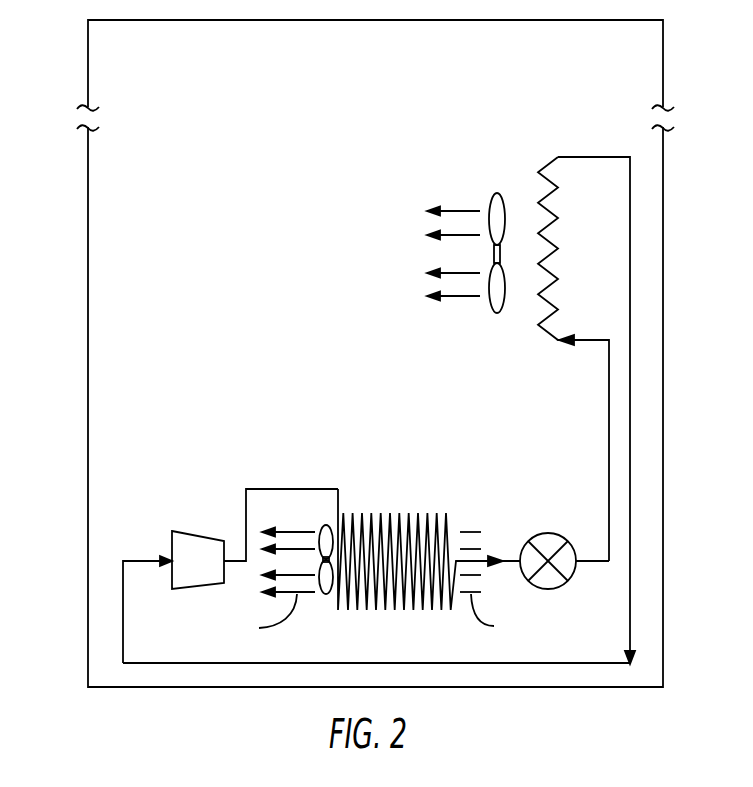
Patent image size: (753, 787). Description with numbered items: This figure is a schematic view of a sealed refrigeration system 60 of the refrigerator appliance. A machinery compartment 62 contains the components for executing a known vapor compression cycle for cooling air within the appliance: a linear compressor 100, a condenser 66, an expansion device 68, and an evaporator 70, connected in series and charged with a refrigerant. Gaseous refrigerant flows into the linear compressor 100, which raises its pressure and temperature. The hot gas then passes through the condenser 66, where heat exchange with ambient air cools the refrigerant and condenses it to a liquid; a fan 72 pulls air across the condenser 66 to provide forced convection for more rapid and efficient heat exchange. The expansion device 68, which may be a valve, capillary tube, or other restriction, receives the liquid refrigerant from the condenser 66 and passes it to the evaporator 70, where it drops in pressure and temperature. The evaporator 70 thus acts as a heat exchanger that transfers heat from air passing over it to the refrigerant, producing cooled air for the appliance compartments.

The sealed refrigeration system 60 is at (371, 448).
The machinery compartment 62 is at (124, 514).
The condenser 66 is at (420, 513).
The expansion device 68 is at (543, 535).
The evaporator 70 is at (538, 206).
The fan 72 is at (319, 533).
The linear compressor 100 is at (196, 531).